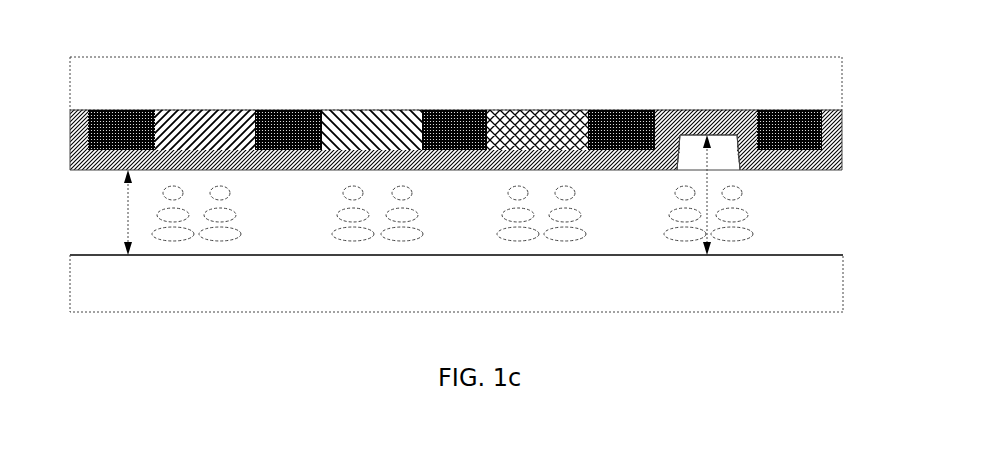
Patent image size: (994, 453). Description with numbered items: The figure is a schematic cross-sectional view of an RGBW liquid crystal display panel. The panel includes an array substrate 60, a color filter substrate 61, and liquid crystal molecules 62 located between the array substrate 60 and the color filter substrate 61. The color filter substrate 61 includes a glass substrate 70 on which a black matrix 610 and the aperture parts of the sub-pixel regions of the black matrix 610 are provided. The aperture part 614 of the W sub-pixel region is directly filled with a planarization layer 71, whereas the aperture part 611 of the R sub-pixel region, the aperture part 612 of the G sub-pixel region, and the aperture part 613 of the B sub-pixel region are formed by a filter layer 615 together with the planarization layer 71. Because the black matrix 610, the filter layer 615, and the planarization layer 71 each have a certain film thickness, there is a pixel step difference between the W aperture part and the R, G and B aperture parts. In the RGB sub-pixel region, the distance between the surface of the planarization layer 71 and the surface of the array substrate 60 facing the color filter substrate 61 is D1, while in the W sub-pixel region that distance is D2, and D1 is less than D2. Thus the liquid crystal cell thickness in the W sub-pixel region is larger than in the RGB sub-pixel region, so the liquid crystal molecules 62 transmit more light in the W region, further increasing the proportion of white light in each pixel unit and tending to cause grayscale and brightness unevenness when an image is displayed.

The array substrate 60 is at (782, 292).
The color filter substrate 61 is at (484, 95).
The liquid crystal molecules 62 is at (575, 233).
The glass substrate 70 is at (827, 70).
The planarization layer 71 is at (740, 110).
The black matrix 610 is at (103, 110).
The aperture part of R sub-pixel region 611 is at (203, 110).
The aperture part of G sub-pixel region 612 is at (365, 110).
The aperture part of B sub-pixel region 613 is at (527, 110).
The aperture part of W sub-pixel region 614 is at (687, 110).
The filter layer 615 is at (402, 110).
The distance in RGB sub-pixel region D1 is at (127, 202).
The distance in W sub-pixel region D2 is at (710, 170).